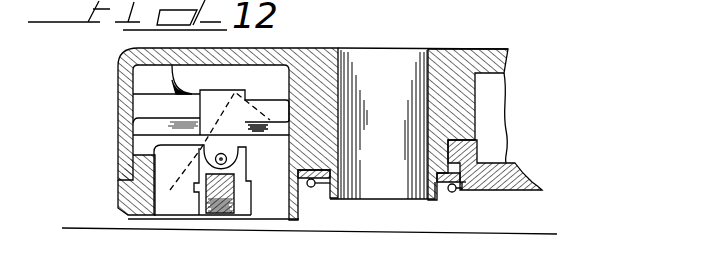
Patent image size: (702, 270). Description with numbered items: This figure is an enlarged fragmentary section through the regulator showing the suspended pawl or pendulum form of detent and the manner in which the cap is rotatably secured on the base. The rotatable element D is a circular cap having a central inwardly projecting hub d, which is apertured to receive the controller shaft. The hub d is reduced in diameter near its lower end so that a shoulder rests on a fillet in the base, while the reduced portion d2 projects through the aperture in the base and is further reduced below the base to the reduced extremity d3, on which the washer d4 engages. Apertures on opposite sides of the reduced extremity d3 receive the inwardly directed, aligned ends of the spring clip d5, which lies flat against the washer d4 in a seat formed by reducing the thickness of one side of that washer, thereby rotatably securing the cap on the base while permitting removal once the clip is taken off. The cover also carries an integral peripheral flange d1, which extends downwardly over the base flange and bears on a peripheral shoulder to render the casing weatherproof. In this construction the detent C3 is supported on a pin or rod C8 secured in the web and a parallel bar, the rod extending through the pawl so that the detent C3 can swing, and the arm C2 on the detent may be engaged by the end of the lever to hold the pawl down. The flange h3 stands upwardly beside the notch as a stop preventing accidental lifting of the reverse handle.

The rotatable element D is at (457, 70).
The hub d is at (458, 127).
The peripheral flange d1 is at (118, 117).
The reduced portion of the hub d2 is at (506, 155).
The reduced extremity of the hub d3 is at (438, 193).
The washer d4 is at (458, 178).
The spring clip d5 is at (322, 180).
The flange h3 is at (128, 188).
The pin or rod C8 is at (219, 166).
The arm C2 is at (246, 137).
The detent C3 is at (233, 93).